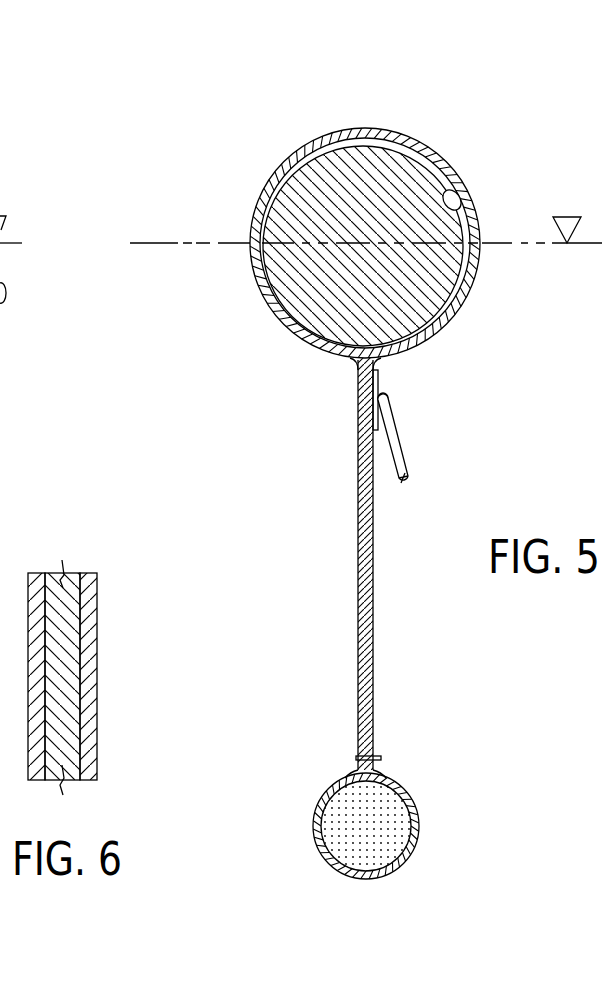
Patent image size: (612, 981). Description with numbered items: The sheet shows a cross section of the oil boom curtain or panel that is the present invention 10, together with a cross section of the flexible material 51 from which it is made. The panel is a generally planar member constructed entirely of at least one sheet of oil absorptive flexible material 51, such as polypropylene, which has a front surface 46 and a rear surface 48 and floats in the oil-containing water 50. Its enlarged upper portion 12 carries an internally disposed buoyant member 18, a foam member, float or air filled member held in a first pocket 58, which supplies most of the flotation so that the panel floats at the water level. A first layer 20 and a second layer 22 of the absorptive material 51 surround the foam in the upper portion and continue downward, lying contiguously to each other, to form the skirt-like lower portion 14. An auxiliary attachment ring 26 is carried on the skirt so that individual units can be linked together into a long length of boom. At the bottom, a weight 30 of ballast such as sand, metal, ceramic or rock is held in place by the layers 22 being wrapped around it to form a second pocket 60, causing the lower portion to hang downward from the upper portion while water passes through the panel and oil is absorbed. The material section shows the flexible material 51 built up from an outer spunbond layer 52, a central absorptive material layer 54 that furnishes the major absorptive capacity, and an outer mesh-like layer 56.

In FIG. 5, the present invention 10 is at (170, 122).
In FIG. 5, the upper portion 12 is at (256, 181).
In FIG. 5, the lower portion 14 is at (328, 613).
In FIG. 5, the buoyant member 18 is at (402, 229).
In FIG. 5, the first pocket 58 is at (452, 154).
In FIG. 5, the first layer 20 is at (447, 186).
In FIG. 5, the second layer 22 is at (457, 306).
In FIG. 5, the auxiliary attachment rings 26 is at (405, 469).
In FIG. 5, the weight 30 is at (318, 826).
In FIG. 5, the second pocket 60 is at (326, 827).
In FIG. 5, the front surface 46 is at (375, 686).
In FIG. 5, the rear surface 48 is at (356, 683).
In FIG. 5, the water 50 is at (520, 245).
In FIG. 5, the flexible material 51 is at (357, 553).
In FIG. 6, the flexible material 51 is at (108, 665).
In FIG. 6, the outer spunbond layer 52 is at (35, 572).
In FIG. 6, the central absorptive material layer 54 is at (70, 572).
In FIG. 6, the outer mesh-like layer 56 is at (92, 572).